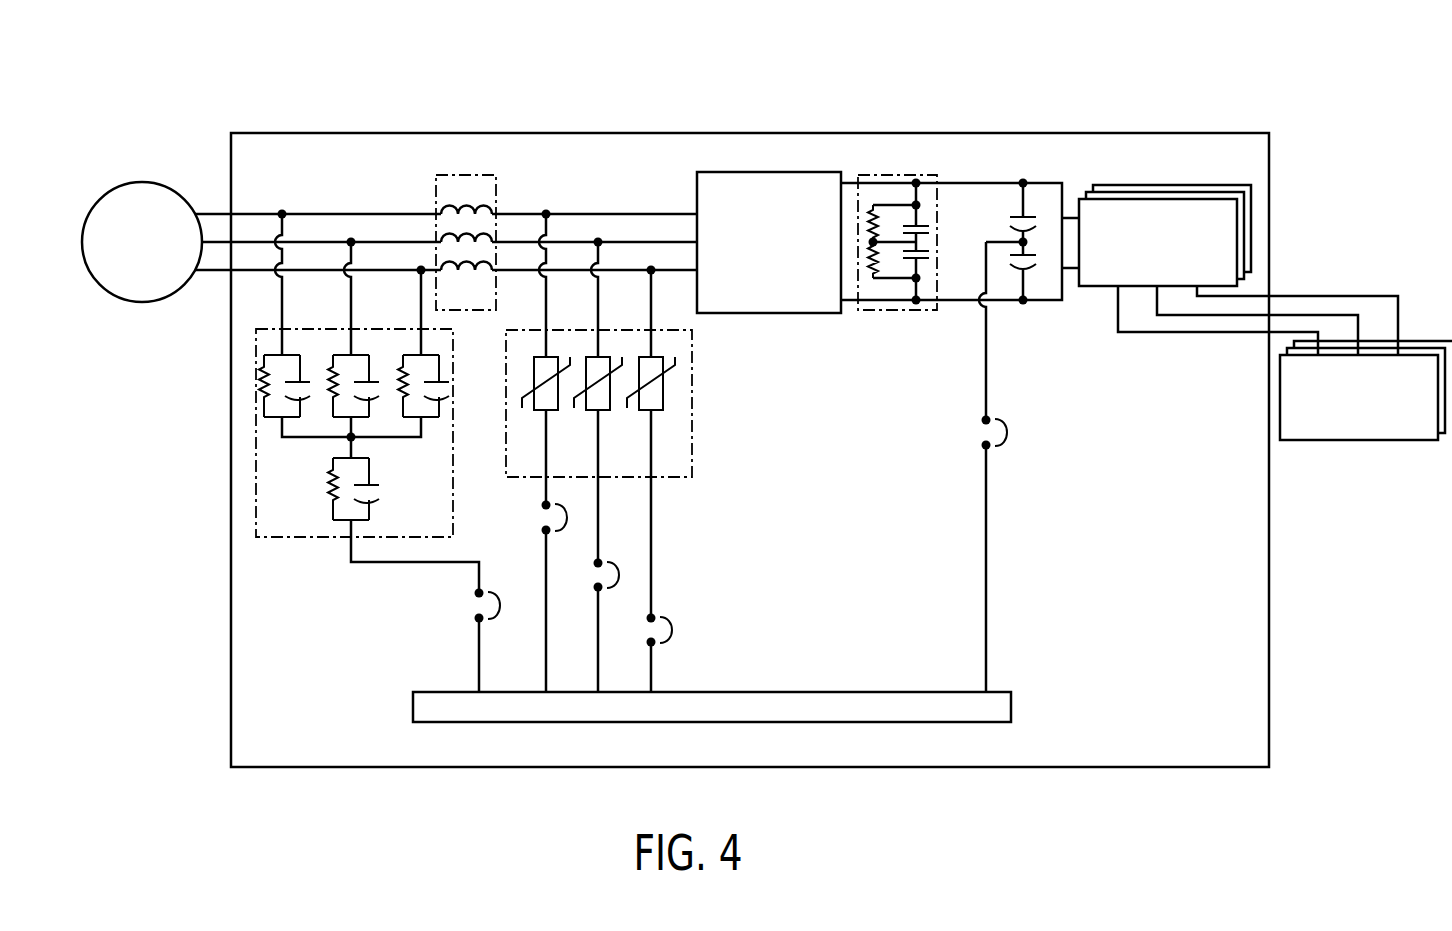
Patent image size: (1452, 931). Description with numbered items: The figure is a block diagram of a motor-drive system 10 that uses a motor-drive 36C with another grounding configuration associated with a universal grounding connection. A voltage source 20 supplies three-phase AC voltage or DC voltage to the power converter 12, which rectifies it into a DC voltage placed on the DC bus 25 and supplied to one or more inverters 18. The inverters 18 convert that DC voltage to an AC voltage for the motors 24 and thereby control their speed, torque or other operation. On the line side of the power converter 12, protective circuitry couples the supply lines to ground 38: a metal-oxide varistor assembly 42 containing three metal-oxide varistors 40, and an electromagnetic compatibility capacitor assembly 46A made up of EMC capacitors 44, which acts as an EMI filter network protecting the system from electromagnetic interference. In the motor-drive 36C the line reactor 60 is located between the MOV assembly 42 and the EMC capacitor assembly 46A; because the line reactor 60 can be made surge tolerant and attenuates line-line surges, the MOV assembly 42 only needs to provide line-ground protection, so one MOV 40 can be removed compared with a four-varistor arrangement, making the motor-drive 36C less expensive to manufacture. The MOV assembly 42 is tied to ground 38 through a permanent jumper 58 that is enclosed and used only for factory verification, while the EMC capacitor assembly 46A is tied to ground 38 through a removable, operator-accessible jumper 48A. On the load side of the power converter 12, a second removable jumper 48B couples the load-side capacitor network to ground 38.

The motor-drive system 10 is at (1090, 67).
The motor-drive 36C is at (460, 133).
The voltage source 20 is at (120, 186).
The line reactor 60 is at (482, 173).
The power converter 12 is at (803, 172).
The DC bus 25 is at (917, 175).
The inverter 18 is at (1100, 287).
The motor 24 is at (1343, 440).
The electromagnetic compatibility capacitor 44 is at (440, 382).
The electromagnetic compatibility capacitor assembly 46A is at (376, 463).
The metal-oxide varistor assembly 42 is at (617, 403).
The metal-oxide varistor 40 is at (552, 413).
The permanent jumper 58 is at (571, 525).
The jumper 48A is at (498, 603).
The jumper 48B is at (1012, 432).
The ground 38 is at (843, 690).